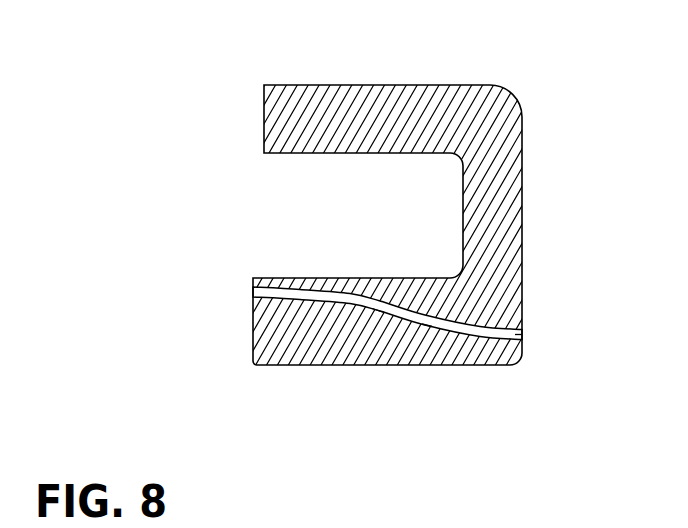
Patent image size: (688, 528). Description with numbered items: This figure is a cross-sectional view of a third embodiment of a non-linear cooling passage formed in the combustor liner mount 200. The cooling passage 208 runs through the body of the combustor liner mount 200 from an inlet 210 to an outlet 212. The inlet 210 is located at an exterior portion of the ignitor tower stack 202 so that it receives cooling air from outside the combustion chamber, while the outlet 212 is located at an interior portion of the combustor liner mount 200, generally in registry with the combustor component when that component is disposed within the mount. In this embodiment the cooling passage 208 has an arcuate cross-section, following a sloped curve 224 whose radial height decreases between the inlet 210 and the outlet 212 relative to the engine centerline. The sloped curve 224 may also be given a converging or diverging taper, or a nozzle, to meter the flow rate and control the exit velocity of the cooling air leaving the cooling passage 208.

The combustor liner mount 200 is at (388, 230).
The ignitor tower stack 202 is at (388, 225).
The cooling passage 208 is at (378, 311).
The inlet 210 is at (253, 288).
The outlet 212 is at (522, 333).
The sloped curve 224 is at (427, 318).